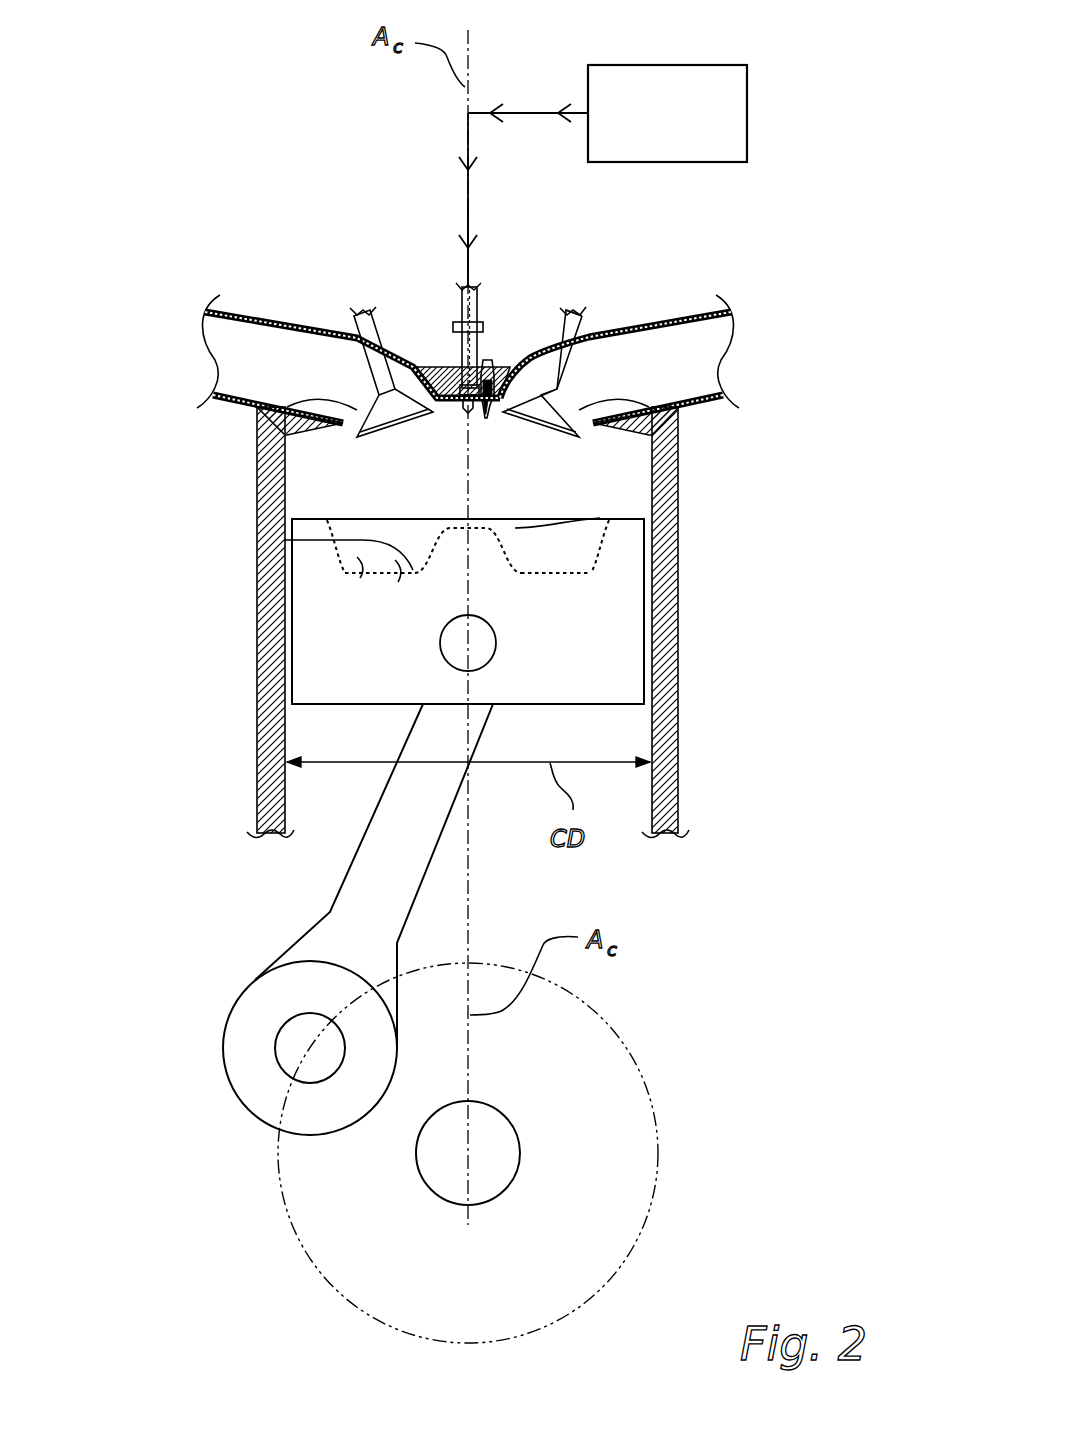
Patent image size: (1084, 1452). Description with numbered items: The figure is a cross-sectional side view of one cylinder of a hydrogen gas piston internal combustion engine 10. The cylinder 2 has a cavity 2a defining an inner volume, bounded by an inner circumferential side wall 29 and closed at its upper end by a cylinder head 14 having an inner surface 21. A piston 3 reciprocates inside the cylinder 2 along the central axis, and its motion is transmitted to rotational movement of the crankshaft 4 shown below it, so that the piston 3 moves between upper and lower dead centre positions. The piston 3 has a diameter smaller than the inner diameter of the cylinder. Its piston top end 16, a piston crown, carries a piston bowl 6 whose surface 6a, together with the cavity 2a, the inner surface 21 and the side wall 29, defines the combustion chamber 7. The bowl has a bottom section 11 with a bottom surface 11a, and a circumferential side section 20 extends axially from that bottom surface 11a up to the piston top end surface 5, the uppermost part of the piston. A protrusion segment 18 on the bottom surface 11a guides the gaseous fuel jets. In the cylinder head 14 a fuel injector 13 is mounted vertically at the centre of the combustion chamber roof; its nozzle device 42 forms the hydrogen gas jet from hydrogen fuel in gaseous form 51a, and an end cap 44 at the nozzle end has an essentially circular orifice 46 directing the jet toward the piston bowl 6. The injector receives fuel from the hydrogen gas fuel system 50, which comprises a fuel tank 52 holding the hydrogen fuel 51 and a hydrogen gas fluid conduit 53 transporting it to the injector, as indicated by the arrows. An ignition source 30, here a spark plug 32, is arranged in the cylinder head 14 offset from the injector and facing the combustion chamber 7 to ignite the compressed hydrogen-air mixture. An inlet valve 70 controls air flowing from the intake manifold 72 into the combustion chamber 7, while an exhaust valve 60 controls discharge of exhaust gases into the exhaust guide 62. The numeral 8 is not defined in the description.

The cylinder 2 is at (603, 428).
The cavity 2a is at (605, 472).
The piston 3 is at (600, 677).
The crankshaft 4 is at (521, 1143).
The piston top end surface 5 is at (630, 507).
The piston bowl 6 is at (600, 518).
The piston bowl surface 6a is at (285, 540).
The combustion chamber 7 is at (363, 583).
The bowl lip 8 is at (397, 582).
The internal combustion engine 10 is at (578, 258).
The bottom section 11 is at (570, 639).
The bottom surface 11a is at (530, 577).
The fuel injector 13 is at (410, 323).
The cylinder head 14 is at (257, 458).
The piston top end 16 is at (625, 533).
The protrusion segment 18 is at (450, 530).
The circumferential side section 20 is at (340, 562).
The inner surface 21 is at (338, 458).
The inner circumferential side wall 29 is at (653, 632).
The ignition source 30 is at (528, 349).
The spark plug 32 is at (497, 360).
The nozzle device 42 is at (460, 352).
The end cap 44 is at (457, 363).
The injection orifice 46 is at (380, 357).
The hydrogen gas fuel system 50 is at (517, 100).
The hydrogen gas fuel 51 is at (475, 248).
The hydrogen fuel in gaseous form 51a is at (668, 139).
The fuel tank 52 is at (667, 81).
The hydrogen gas fluid conduit 53 is at (462, 140).
The exhaust valve 60 is at (615, 412).
The exhaust guide 62 is at (667, 353).
The inlet valve 70 is at (257, 420).
The intake manifold 72 is at (270, 352).